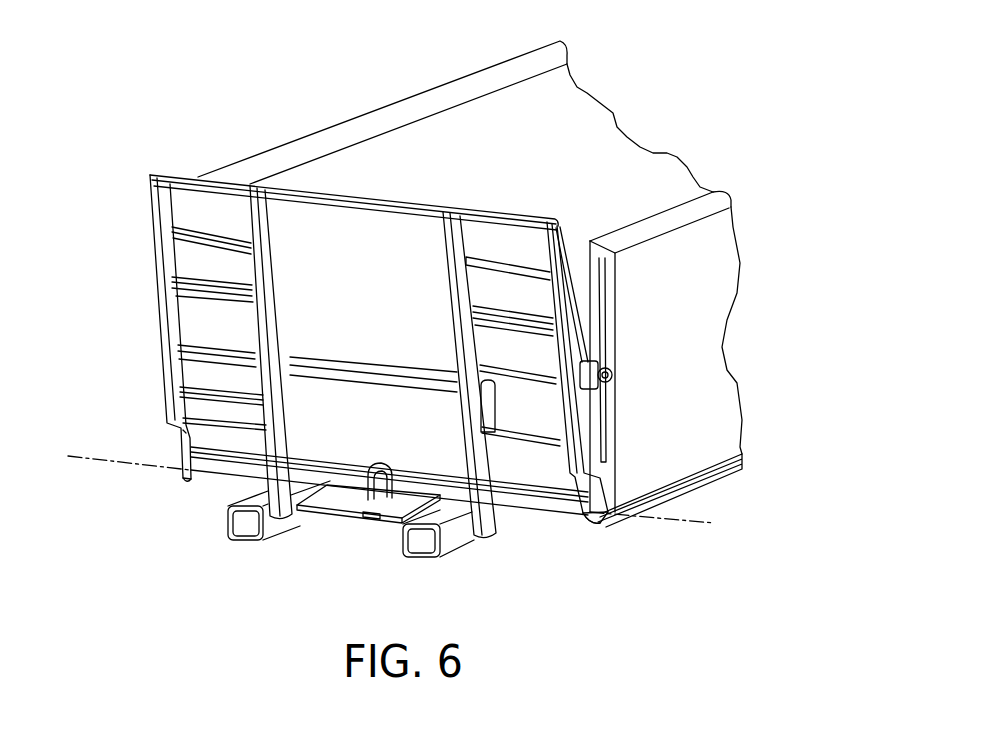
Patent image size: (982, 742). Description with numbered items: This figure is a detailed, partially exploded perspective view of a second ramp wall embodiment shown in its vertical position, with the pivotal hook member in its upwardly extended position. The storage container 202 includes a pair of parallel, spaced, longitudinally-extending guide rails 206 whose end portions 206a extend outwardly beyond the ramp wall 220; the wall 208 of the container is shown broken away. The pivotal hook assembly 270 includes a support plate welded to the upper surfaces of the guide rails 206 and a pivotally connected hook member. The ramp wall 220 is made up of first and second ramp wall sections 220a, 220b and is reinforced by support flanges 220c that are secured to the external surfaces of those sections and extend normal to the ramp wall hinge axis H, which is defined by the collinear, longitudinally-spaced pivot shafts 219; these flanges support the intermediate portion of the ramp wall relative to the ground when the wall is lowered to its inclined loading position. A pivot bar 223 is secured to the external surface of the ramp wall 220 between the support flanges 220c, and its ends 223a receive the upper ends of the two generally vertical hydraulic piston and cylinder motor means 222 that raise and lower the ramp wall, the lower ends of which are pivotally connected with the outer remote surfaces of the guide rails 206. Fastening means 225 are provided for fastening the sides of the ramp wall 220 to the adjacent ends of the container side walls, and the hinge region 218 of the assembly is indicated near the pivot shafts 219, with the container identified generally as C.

The storage container 202 is at (311, 133).
The side wall panel 208 is at (461, 131).
The guide rails 206 is at (706, 252).
The end portions 206a is at (238, 527).
The ramp wall 220 is at (150, 170).
The first ramp wall section 220a is at (204, 362).
The second ramp wall section 220b is at (203, 305).
The support flanges 220c is at (165, 426).
The pivot bar 223 is at (370, 370).
The ends of pivot bar 223a is at (484, 391).
The fastening means 225 is at (612, 376).
The hydraulic piston and cylinder motor means 222 is at (490, 457).
The pivot shafts 219 is at (198, 476).
The hinge assembly 218 is at (622, 557).
The pivotal hook assembly 270 is at (358, 527).
The container C is at (557, 174).
The ramp wall hinge axis H is at (390, 490).